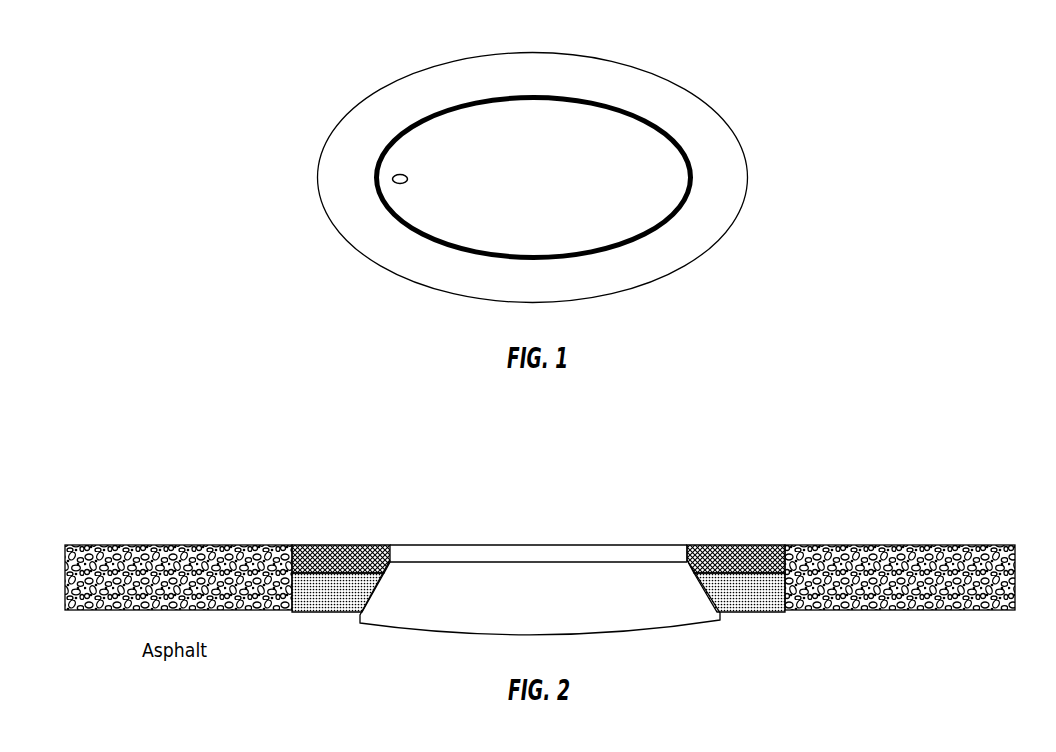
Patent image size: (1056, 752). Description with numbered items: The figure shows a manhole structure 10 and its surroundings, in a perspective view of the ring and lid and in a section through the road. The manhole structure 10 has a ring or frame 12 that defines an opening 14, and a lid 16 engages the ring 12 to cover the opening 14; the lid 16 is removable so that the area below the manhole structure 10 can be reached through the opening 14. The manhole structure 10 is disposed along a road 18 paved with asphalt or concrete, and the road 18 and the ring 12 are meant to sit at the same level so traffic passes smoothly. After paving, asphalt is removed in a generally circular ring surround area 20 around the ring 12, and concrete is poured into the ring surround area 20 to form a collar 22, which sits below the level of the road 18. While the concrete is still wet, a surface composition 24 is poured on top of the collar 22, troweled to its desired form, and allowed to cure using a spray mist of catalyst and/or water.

In FIG. 2, the manhole structure 10 is at (540, 584).
In FIG. 1, the ring or frame 12 is at (425, 265).
In FIG. 2, the ring or frame 12 is at (452, 608).
In FIG. 2, the opening 14 is at (694, 545).
In FIG. 1, the lid 16 is at (537, 182).
In FIG. 2, the lid 16 is at (495, 552).
In FIG. 2, the road 18 is at (222, 545).
In FIG. 2, the ring surround area 20 is at (790, 545).
In FIG. 2, the collar 22 is at (327, 617).
In FIG. 2, the surface composition 24 is at (340, 545).